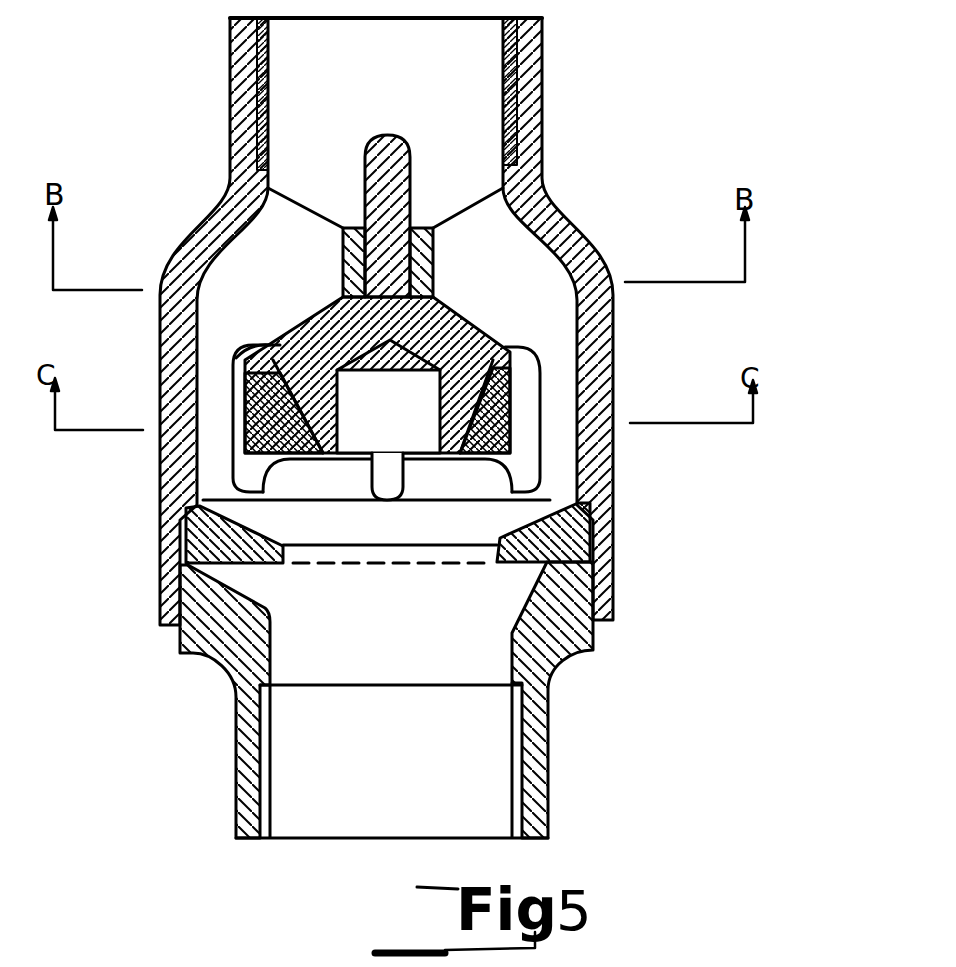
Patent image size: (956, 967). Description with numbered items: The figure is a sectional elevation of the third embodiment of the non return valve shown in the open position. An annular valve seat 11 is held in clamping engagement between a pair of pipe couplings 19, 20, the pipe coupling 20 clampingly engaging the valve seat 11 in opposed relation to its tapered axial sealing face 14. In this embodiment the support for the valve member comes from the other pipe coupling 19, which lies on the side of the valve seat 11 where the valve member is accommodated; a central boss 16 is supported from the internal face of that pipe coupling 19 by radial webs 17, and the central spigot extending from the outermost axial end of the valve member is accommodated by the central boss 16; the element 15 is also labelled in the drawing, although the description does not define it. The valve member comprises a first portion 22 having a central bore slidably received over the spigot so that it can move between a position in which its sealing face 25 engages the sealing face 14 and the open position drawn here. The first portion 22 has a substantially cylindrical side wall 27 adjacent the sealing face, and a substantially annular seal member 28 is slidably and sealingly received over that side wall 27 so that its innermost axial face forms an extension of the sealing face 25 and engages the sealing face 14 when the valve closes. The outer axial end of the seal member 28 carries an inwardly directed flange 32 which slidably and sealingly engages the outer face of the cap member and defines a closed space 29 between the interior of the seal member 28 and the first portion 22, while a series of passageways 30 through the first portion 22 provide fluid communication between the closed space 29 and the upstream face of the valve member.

The valve seat 11 is at (597, 530).
The sealing face 14 is at (583, 493).
The guide pin 15 is at (410, 168).
The central boss 16 is at (435, 278).
The radial webs 17 is at (553, 320).
The pipe coupling 19 is at (550, 222).
The pipe coupling 20 is at (536, 735).
The first portion 22 is at (583, 453).
The sealing face 25 is at (203, 500).
The side wall 27 is at (263, 413).
The seal member 28 is at (580, 393).
The closed space 29 is at (577, 383).
The passageways 30 is at (233, 470).
The inwardly directed flange 32 is at (228, 353).